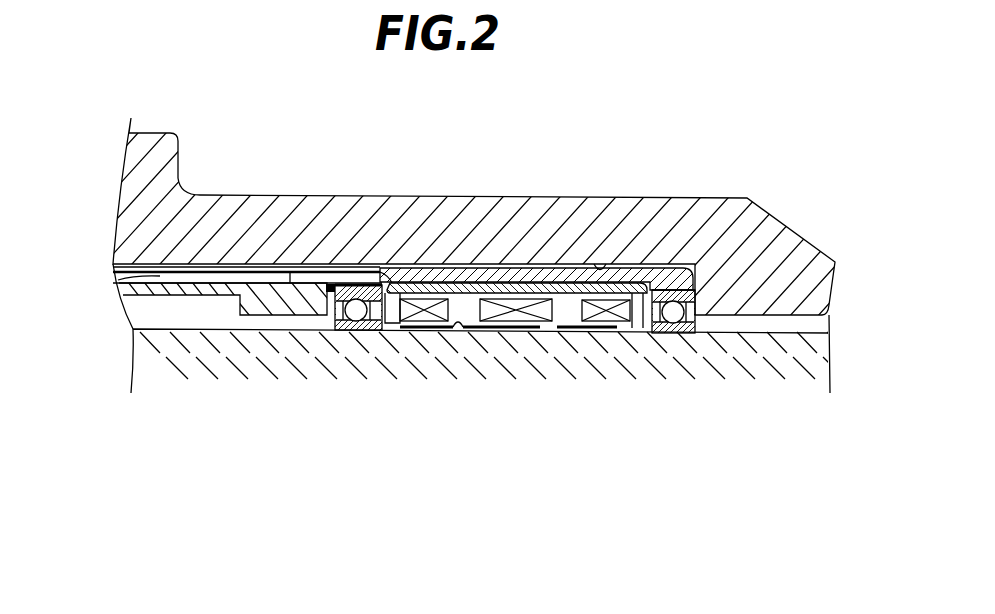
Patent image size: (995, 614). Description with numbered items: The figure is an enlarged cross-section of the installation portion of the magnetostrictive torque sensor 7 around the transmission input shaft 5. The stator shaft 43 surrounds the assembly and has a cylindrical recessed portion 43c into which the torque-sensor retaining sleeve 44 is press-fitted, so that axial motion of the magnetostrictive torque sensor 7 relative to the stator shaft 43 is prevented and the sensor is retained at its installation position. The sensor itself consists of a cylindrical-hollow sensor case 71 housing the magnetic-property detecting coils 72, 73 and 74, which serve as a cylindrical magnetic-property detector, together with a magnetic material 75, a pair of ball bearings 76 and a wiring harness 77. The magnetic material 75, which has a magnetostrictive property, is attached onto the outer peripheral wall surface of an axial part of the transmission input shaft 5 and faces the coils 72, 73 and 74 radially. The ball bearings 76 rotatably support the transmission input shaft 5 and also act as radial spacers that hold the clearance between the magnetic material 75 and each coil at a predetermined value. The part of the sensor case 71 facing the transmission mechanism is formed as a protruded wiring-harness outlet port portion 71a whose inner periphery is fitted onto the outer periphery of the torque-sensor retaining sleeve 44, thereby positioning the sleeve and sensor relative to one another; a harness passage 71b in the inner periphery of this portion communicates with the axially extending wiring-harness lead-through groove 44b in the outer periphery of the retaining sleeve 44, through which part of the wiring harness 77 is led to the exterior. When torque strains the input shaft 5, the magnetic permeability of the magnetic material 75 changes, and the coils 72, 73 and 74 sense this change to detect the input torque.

The stator shaft 43 is at (453, 217).
The cylindrical recessed portion 43c is at (600, 266).
The magnetostrictive torque sensor 7 is at (652, 267).
The cylindrical-hollow sensor case 71 is at (515, 272).
The protruded wiring-harness outlet port portion 71a is at (303, 267).
The harness passage 71b is at (337, 267).
The wiring harness 77 is at (377, 272).
The torque-sensor retaining sleeve 44 is at (263, 316).
The wiring-harness lead-through groove 44b is at (118, 280).
The ball bearing 76 is at (355, 312).
The magnetic-property detecting coil 72 is at (418, 330).
The magnetic-property detecting coil 73 is at (516, 323).
The magnetic-property detecting coil 74 is at (607, 325).
The magnetic material 75 is at (448, 329).
The transmission input shaft 5 is at (503, 360).